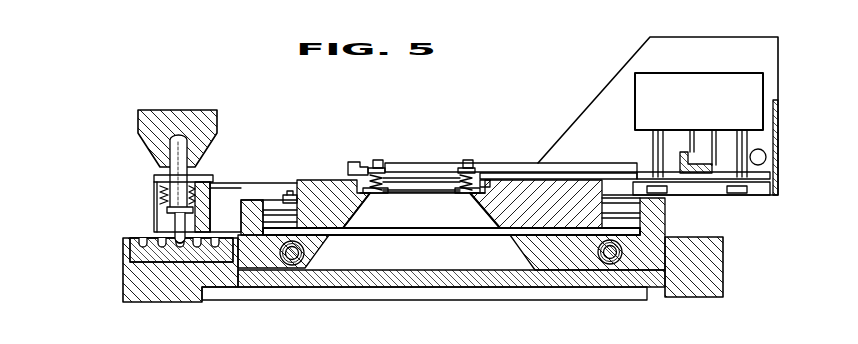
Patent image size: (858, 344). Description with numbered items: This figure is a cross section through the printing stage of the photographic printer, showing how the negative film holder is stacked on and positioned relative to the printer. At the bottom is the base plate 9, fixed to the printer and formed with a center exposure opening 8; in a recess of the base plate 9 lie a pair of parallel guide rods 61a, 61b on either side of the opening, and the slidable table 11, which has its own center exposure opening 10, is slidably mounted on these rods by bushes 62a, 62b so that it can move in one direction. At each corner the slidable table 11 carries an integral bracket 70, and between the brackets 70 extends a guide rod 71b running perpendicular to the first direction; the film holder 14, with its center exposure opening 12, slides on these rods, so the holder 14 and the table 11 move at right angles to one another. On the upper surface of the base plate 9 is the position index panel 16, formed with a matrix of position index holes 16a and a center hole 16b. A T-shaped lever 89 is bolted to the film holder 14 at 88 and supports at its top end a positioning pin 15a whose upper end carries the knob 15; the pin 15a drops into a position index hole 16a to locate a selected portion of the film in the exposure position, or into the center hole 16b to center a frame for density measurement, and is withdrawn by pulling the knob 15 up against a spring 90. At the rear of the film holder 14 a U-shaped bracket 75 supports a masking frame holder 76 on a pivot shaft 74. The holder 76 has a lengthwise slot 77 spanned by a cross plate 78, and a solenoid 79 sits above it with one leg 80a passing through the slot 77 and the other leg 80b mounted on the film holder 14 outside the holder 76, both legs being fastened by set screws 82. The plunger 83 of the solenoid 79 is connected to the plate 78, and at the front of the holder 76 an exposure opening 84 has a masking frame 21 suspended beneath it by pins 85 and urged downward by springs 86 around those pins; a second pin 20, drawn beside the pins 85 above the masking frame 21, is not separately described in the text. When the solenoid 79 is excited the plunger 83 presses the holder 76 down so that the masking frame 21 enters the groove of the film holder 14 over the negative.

The center exposure opening 8 is at (535, 273).
The base plate 9 is at (127, 290).
The center exposure opening 10 is at (512, 237).
The slidable table 11 is at (250, 270).
The center exposure opening 12 is at (471, 194).
The film holder 14 is at (563, 195).
The knob 15 is at (180, 118).
The positioning pin 15a is at (175, 160).
The position index panel 16 is at (133, 256).
The position index holes 16a is at (141, 243).
The center hole 16b is at (181, 246).
The screw 20 is at (466, 175).
The masking frame 21 is at (425, 182).
The guide rod 61a is at (307, 254).
The guide rod 61b is at (613, 262).
The bush 62a is at (292, 262).
The bush 62b is at (605, 262).
The bracket 70 is at (252, 205).
The guide rod 71b is at (279, 210).
The pivot shaft 74 is at (764, 164).
The U-shaped bracket 75 is at (779, 159).
The masking frame holder 76 is at (535, 172).
The slot 77 is at (650, 165).
The cross plate 78 is at (684, 155).
The solenoid 79 is at (753, 90).
The leg 80a is at (653, 143).
The leg 80b is at (747, 143).
The set screws 82 is at (735, 196).
The plunger 83 is at (700, 143).
The exposure opening 84 is at (492, 165).
The pins 85 is at (378, 160).
The springs 86 is at (380, 192).
The bolt 88 is at (310, 186).
The lever 89 is at (231, 182).
The spring 90 is at (158, 195).